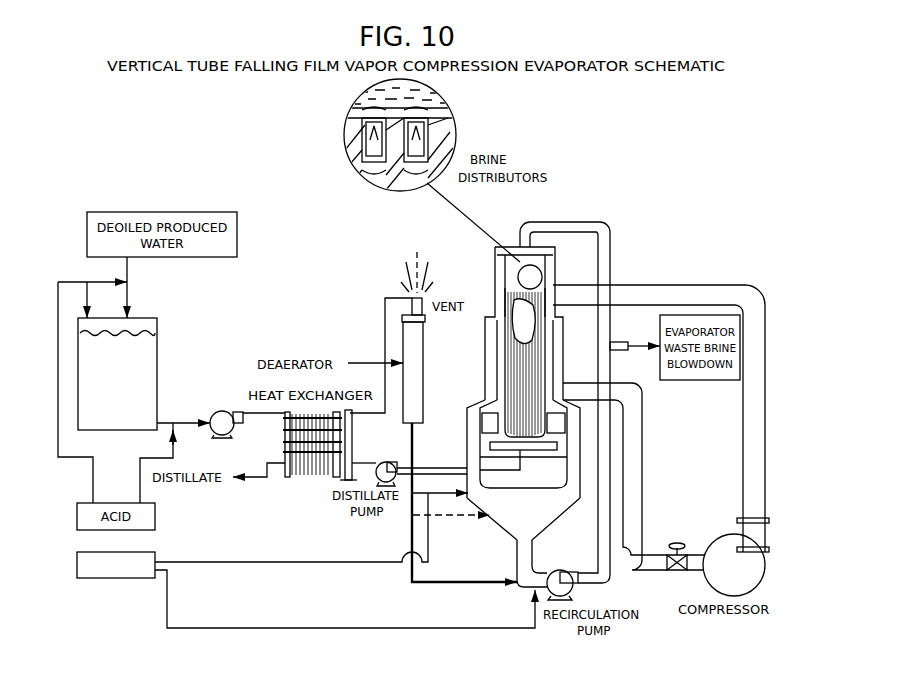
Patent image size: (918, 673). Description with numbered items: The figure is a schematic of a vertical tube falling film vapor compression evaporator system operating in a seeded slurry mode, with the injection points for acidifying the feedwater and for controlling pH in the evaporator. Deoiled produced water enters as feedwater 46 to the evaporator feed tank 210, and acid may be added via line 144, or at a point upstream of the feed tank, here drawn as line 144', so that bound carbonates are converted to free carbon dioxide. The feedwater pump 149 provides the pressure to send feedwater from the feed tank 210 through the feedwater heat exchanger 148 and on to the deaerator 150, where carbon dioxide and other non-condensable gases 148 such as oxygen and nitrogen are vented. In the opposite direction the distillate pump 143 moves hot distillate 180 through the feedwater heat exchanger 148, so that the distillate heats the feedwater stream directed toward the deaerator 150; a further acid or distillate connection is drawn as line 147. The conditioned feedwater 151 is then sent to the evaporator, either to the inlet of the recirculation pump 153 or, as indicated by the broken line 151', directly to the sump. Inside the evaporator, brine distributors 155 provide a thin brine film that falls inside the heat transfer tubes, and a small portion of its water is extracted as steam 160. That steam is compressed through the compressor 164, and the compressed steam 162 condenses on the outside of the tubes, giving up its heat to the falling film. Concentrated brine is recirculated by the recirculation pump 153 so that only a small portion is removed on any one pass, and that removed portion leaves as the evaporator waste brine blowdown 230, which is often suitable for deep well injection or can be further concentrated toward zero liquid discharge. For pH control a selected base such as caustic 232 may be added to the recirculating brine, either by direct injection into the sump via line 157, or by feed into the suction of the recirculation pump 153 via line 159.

The distributors 155 is at (365, 105).
The blowdown 230 is at (618, 340).
The acid line 144 is at (100, 343).
The feed water line 144' is at (129, 275).
The feedwater 46 is at (132, 297).
The evaporator feed tank 210 is at (157, 363).
The feedwater pump 149 is at (217, 412).
The feedwater heat exchanger 148 is at (410, 284).
The evaporator feedwater deaerator 150 is at (365, 362).
The distillate pump 143 is at (392, 452).
The distillate 180 is at (441, 466).
The steam 160 is at (637, 458).
The compressed steam 162 is at (745, 452).
The compressor 164 is at (733, 537).
The recirculation pump 153 is at (555, 570).
The conditioned feedwater 151 is at (434, 554).
The broken line 151' is at (451, 535).
The line 157 is at (256, 560).
The line 159 is at (322, 627).
The acid feed line 147 is at (141, 487).
The caustic 232 is at (118, 578).